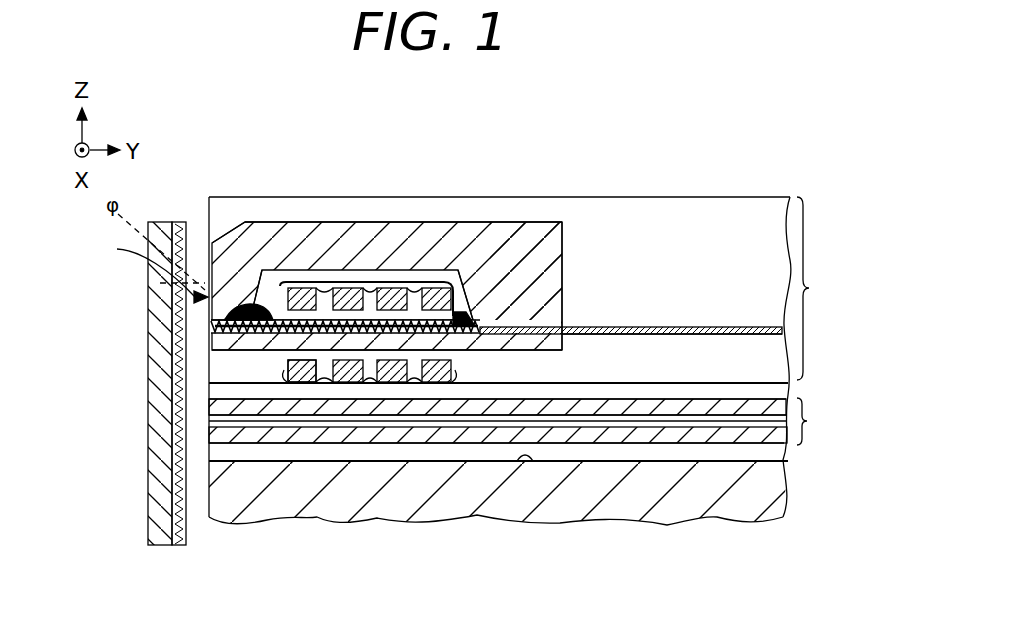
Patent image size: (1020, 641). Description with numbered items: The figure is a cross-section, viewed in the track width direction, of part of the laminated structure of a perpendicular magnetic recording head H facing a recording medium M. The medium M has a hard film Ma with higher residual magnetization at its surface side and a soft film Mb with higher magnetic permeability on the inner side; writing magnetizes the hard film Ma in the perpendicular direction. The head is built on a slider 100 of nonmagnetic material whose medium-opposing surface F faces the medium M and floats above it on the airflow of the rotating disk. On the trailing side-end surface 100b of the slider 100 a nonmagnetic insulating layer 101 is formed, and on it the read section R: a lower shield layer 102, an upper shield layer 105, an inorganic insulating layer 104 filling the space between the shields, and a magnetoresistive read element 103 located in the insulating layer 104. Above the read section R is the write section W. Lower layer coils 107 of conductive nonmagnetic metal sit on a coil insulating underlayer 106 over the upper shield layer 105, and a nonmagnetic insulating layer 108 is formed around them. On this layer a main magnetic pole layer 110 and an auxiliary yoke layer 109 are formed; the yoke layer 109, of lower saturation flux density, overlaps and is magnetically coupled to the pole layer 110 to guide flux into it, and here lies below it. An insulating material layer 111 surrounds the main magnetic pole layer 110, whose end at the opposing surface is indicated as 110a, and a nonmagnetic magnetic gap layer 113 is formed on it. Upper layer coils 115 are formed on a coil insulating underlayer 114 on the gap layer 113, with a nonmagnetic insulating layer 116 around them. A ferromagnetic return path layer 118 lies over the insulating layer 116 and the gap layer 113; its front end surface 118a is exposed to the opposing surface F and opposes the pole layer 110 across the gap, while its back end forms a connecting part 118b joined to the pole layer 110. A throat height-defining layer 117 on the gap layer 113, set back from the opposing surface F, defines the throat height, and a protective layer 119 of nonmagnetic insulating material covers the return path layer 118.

The slider 100 is at (214, 497).
The trailing side-end surface 100b is at (530, 463).
The nonmagnetic insulating layer 101 is at (215, 455).
The lower shield layer 102 is at (214, 439).
The read element 103 is at (213, 411).
The inorganic insulating layer 104 is at (677, 420).
The upper shield layer 105 is at (226, 389).
The coil insulating underlayer 106 is at (307, 392).
The lower layer coils 107 is at (372, 385).
The nonmagnetic insulating layer 108 is at (733, 378).
The auxiliary yoke layer 109 is at (250, 352).
The main magnetic pole layer 110 is at (300, 343).
The main pole end 110a is at (213, 328).
The insulating material layer 111 is at (755, 325).
The magnetic gap layer 113 is at (236, 311).
The coil insulating underlayer 114 is at (471, 325).
The upper layer coils 115 is at (372, 282).
The nonmagnetic insulating layer 116 is at (304, 288).
The throat height-defining layer 117 is at (244, 280).
The return path layer 118 is at (400, 222).
The front end surface 118a is at (208, 247).
The connecting part 118b is at (529, 252).
The protective layer 119 is at (320, 213).
The perpendicular magnetic recording head H is at (768, 113).
The recording medium M is at (130, 410).
The hard film Ma is at (150, 545).
The soft film Mb is at (160, 515).
The medium-opposing surface F is at (151, 270).
The write section W is at (819, 288).
The read section R is at (815, 421).